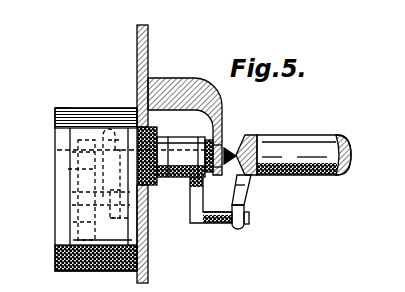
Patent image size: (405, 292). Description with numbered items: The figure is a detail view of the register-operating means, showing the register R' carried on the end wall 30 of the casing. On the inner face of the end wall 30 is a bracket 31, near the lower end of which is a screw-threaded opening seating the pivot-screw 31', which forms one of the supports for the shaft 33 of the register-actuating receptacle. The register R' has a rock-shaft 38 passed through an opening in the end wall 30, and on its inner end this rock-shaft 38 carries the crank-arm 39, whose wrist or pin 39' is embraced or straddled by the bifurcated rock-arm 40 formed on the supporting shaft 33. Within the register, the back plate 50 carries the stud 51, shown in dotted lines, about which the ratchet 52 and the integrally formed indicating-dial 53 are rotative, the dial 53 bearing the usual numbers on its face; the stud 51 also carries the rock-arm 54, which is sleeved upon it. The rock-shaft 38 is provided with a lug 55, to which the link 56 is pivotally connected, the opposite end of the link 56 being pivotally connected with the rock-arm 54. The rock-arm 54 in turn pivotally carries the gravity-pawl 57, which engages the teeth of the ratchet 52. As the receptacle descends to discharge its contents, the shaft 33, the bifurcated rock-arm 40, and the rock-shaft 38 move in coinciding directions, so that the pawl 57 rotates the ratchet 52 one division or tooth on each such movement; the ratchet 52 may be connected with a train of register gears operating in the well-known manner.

The end wall 30 is at (150, 59).
The bracket 31 is at (207, 126).
The pivot-screw 31' is at (264, 145).
The shaft 33 is at (320, 168).
The rock-shaft 38 is at (58, 147).
The crank-arm 39 is at (197, 200).
The wrist or pin 39' is at (219, 231).
The bifurcated rock-arm 40 is at (243, 195).
The back plate 50 is at (136, 244).
The stud 51 is at (115, 208).
The ratchet 52 is at (95, 232).
The pin 53 is at (68, 170).
The rock-arm 54 is at (117, 172).
The lug 55 is at (108, 138).
The link 56 is at (72, 152).
The gravity-pawl 57 is at (95, 174).
The register R' is at (78, 189).